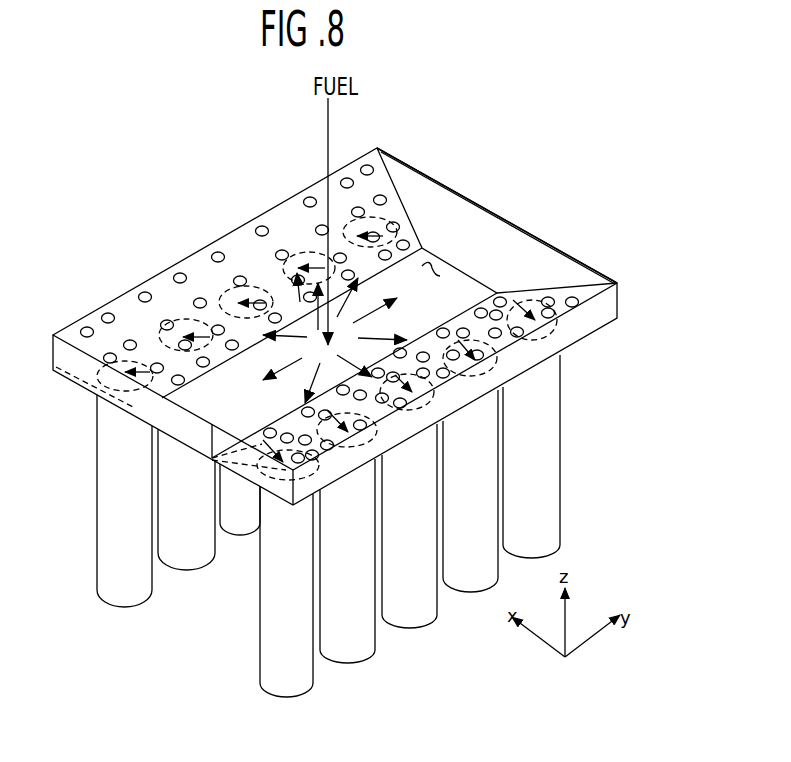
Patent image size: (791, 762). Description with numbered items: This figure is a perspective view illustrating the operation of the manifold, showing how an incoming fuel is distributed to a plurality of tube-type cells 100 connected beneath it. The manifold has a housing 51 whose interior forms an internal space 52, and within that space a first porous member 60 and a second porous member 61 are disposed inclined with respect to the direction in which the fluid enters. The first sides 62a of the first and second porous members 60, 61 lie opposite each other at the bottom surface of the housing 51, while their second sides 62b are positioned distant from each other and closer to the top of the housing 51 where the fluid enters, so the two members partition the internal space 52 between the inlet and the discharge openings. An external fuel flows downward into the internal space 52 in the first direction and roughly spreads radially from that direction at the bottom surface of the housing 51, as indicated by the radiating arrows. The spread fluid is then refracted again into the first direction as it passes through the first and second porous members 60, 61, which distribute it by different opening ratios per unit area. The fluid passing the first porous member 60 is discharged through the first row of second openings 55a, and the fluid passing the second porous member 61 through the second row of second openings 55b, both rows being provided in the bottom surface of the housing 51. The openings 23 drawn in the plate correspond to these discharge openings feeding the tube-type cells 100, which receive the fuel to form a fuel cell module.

The fuel injection holes 23 is at (214, 250).
The housing 51 is at (452, 192).
The internal space 52 is at (437, 267).
The second openings 55a is at (137, 367).
The second openings 55b is at (318, 432).
The first porous member 60 is at (378, 190).
The second porous member 61 is at (557, 293).
The first sides 62a is at (157, 370).
The second sides 62b is at (292, 197).
The tube-type cells 100 is at (544, 460).